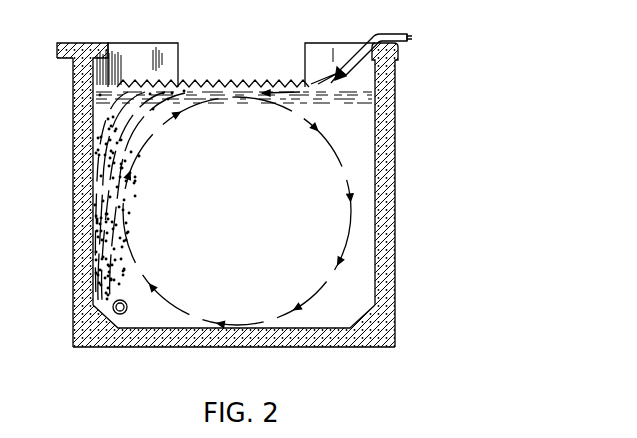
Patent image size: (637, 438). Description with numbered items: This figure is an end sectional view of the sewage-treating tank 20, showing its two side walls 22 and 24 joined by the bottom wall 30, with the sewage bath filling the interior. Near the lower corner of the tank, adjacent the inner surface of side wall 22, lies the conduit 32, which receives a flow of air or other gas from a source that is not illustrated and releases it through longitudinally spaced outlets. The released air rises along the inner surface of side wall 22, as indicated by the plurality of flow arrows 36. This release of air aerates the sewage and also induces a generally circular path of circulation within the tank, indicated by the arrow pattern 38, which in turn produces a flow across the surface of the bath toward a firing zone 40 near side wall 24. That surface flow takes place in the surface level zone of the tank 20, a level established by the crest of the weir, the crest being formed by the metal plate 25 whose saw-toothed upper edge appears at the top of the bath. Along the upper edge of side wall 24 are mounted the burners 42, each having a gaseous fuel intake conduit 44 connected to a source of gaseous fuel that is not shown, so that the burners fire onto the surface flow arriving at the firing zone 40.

The tank 20 is at (396, 227).
The side wall 22 is at (77, 235).
The side wall 24 is at (393, 156).
The metal plate 25 is at (205, 80).
The bottom wall 30 is at (262, 340).
The conduit 32 is at (123, 314).
The flow arrows 36 is at (113, 142).
The arrow pattern 38 is at (347, 179).
The firing zone 40 is at (311, 84).
The burners 42 is at (359, 52).
The gaseous fuel intake conduits 44 is at (407, 36).